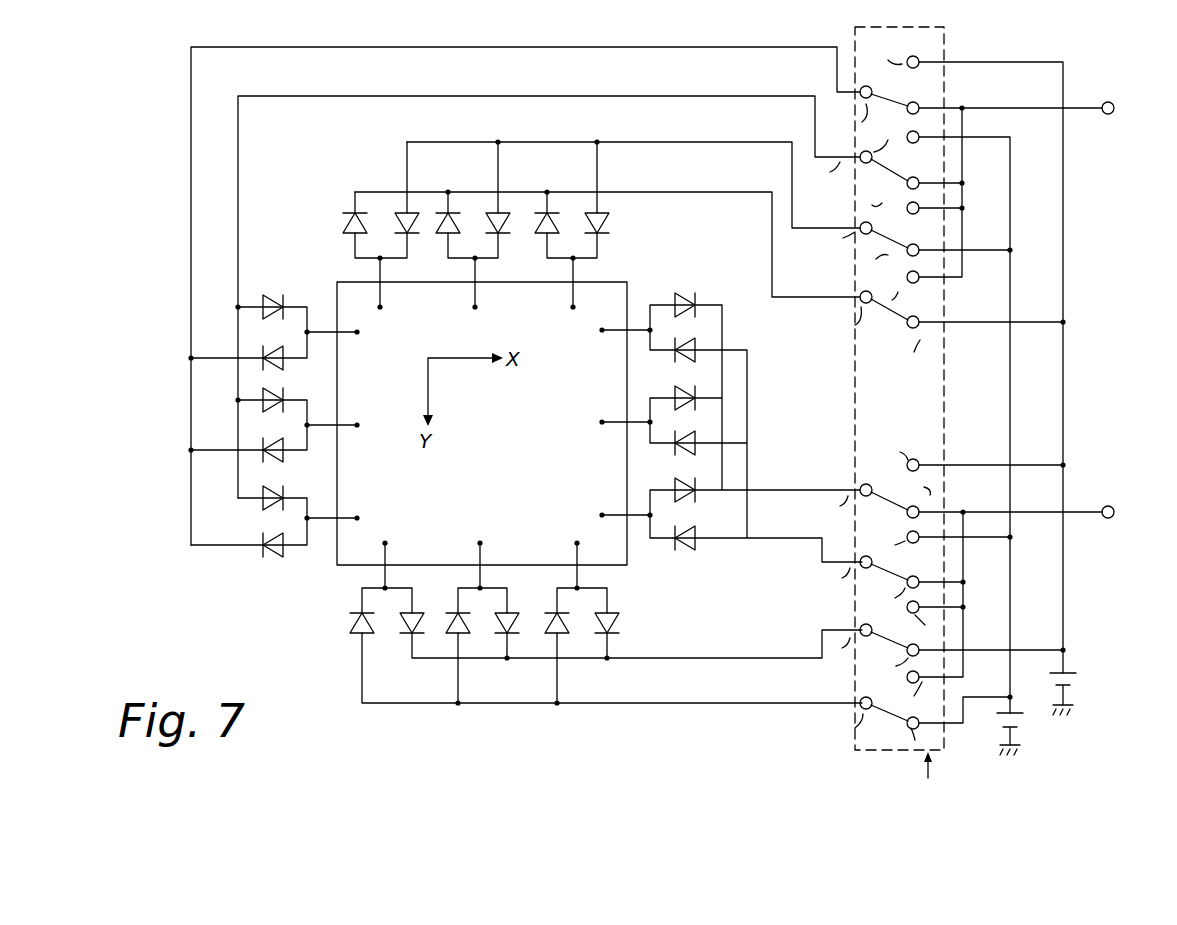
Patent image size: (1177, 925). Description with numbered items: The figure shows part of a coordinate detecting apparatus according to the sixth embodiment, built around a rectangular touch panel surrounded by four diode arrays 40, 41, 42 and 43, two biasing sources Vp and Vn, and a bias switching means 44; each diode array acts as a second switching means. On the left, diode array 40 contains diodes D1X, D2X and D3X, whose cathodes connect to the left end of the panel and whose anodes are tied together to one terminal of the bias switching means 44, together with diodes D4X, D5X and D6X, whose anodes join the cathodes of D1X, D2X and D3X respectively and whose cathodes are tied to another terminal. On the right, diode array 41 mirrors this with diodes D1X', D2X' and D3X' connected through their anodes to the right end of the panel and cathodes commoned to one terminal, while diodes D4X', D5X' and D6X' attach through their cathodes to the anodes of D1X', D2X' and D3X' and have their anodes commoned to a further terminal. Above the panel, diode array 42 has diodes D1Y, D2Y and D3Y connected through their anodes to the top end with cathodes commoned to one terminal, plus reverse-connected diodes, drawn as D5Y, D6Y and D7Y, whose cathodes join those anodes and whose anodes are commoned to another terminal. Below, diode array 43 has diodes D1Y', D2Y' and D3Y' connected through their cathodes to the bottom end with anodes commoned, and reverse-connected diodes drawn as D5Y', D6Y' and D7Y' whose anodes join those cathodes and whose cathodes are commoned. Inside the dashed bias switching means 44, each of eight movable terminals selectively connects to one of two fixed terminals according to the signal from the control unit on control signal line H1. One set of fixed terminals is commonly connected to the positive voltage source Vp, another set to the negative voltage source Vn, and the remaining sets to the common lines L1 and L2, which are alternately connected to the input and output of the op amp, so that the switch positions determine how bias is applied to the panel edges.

The diode array 40 is at (183, 308).
The diode array 41 is at (760, 293).
The diode array 42 is at (598, 132).
The diode array 43 is at (627, 716).
The bias switching means 44 is at (944, 392).
The diode D1X is at (240, 314).
The diode D2X is at (240, 413).
The diode D3X is at (240, 509).
The diode D4X is at (240, 370).
The diode D5X is at (240, 462).
The diode D6X is at (240, 558).
The diode D1Y is at (338, 189).
The diode D2Y is at (439, 189).
The diode D3Y is at (552, 189).
The diode D5Y is at (419, 246).
The diode D6Y is at (514, 246).
The diode D7Y is at (629, 245).
The diode D1X' is at (707, 279).
The diode D2X' is at (744, 387).
The diode D3X' is at (628, 470).
The diode D4X' is at (742, 334).
The diode D5X' is at (744, 451).
The diode D6X' is at (713, 556).
The diode D1Y' is at (325, 632).
The diode D2Y' is at (447, 574).
The diode D3Y' is at (611, 656).
The diode D5Y' is at (396, 649).
The diode D6Y' is at (522, 574).
The diode D7Y' is at (641, 613).
The common line L1 is at (1106, 114).
The common line L2 is at (1112, 518).
The positive voltage source Vp is at (1079, 690).
The negative voltage source Vn is at (1022, 731).
The control signal line H1 is at (941, 775).